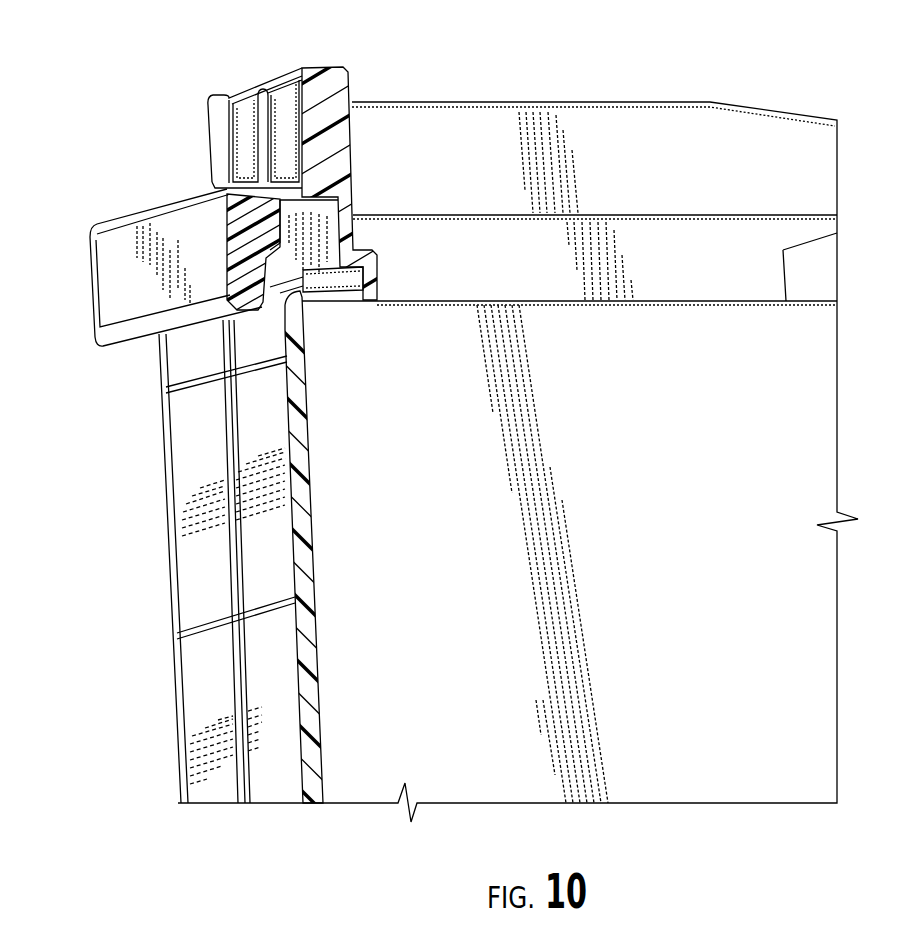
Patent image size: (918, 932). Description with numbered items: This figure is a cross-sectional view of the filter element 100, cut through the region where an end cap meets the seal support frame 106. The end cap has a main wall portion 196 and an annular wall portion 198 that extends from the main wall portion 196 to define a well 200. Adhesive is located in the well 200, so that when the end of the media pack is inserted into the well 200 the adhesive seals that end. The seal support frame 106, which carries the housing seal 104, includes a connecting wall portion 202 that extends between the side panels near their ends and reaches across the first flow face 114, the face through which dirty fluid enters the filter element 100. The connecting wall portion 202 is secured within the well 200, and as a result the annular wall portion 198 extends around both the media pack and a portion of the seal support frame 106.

The filter element 100 is at (124, 64).
The housing seal 104 is at (247, 235).
The seal support frame 106 is at (347, 100).
The first flow face 114 is at (552, 302).
The main wall portion 196 is at (290, 440).
The annular wall portion 198 is at (331, 277).
The well 200 is at (368, 402).
The connecting wall portion 202 is at (332, 300).